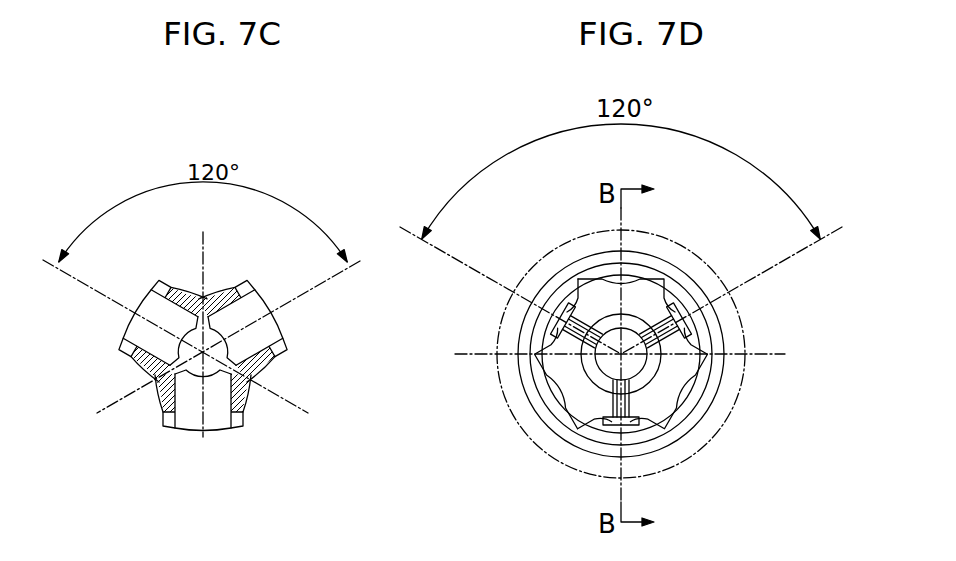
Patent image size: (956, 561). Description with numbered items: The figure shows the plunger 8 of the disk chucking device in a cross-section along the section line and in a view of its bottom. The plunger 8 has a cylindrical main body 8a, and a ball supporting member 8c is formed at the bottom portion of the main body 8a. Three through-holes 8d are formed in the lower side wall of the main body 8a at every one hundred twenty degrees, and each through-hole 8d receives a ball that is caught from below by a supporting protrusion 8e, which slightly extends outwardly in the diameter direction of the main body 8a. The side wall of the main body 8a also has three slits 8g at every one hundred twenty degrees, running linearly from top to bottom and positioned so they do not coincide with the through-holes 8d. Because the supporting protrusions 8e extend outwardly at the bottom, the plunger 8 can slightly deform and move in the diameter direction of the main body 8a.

In FIG. 7C, the plunger 8 is at (202, 389).
In FIG. 7D, the plunger 8 is at (662, 360).
In FIG. 7D, the cylindrical main body 8a is at (720, 323).
In FIG. 7C, the ball supporting member 8c is at (276, 331).
In FIG. 7D, the ball supporting member 8c is at (675, 377).
In FIG. 7C, the through-hole 8d is at (132, 338).
In FIG. 7D, the through-hole 8d is at (641, 425).
In FIG. 7C, the supporting protrusion 8e is at (267, 325).
In FIG. 7D, the slit 8g is at (661, 318).